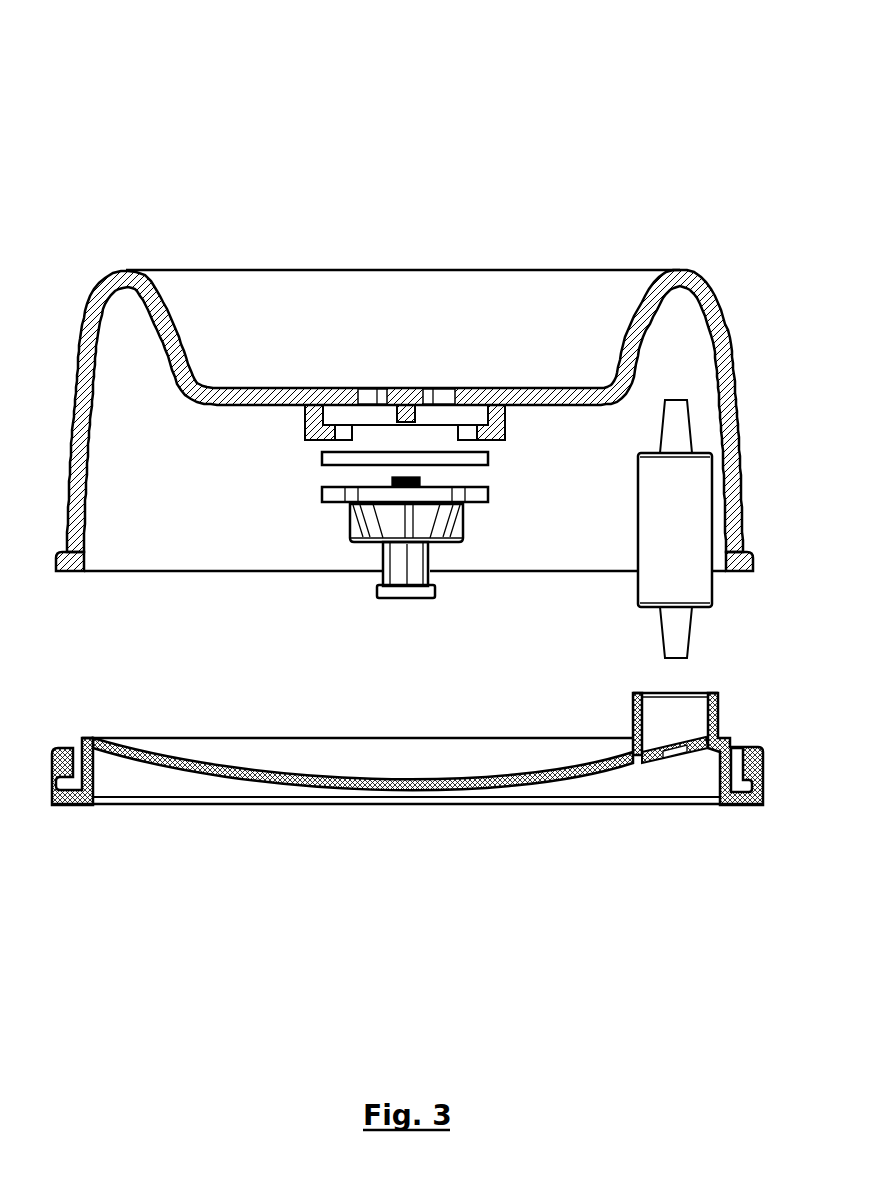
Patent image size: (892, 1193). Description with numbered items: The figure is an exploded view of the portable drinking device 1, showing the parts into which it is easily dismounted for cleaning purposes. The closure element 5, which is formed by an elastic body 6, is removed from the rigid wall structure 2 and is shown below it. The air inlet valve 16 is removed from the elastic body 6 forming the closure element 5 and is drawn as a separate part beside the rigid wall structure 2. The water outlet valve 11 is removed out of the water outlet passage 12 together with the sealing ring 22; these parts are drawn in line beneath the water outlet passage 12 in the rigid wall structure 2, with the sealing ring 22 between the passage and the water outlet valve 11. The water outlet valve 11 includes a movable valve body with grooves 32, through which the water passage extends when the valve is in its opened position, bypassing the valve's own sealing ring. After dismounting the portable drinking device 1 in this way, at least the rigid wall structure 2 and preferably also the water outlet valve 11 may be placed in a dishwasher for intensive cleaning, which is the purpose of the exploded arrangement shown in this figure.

The portable drinking device 1 is at (683, 156).
The rigid wall structure 2 is at (733, 340).
The water outlet passage 12 is at (441, 417).
The sealing ring 22 is at (328, 460).
The water outlet valve 11 is at (347, 558).
The grooves 32 is at (412, 563).
The air inlet valve 16 is at (695, 575).
The closure element 5 is at (71, 820).
The elastic body 6 is at (213, 775).